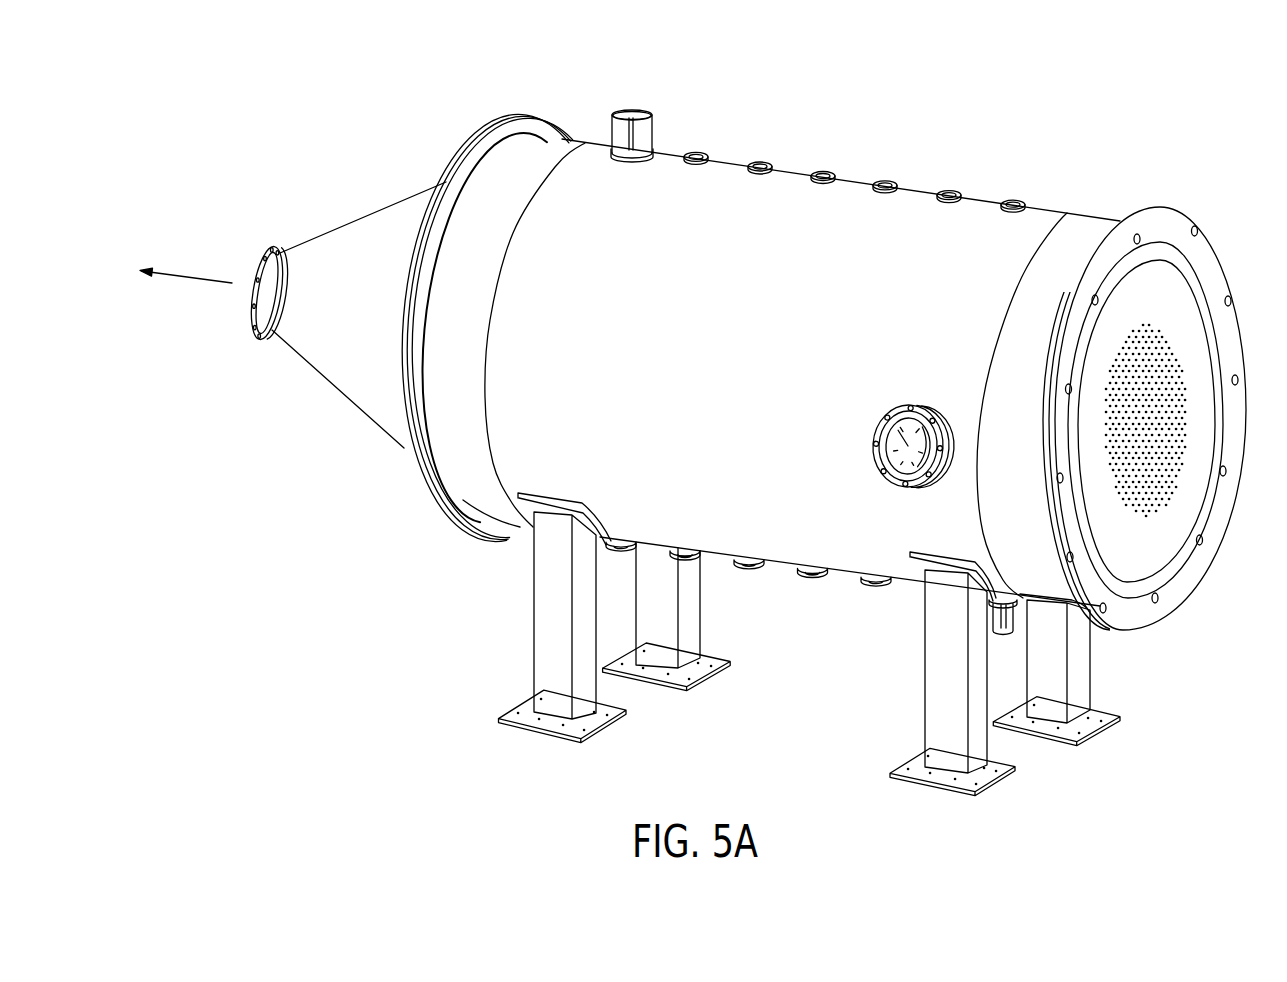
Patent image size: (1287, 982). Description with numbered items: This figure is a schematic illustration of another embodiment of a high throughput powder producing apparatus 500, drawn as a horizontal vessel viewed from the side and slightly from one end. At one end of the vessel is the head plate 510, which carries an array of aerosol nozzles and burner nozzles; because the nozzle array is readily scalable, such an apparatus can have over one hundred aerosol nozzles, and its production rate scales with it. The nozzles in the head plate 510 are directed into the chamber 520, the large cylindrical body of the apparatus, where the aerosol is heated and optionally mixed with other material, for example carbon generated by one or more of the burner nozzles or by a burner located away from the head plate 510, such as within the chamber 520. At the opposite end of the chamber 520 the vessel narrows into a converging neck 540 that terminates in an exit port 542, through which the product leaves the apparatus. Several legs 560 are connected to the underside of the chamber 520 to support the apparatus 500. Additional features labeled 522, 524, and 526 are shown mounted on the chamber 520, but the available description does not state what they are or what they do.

The apparatus 500 is at (1087, 111).
The head plate 510 is at (1181, 221).
The chamber 520 is at (914, 199).
The drain nozzle 522 is at (1000, 627).
The vent nozzle 524 is at (638, 115).
The pressure gauge 526 is at (887, 437).
The converging neck 540 is at (332, 251).
The exit port 542 is at (255, 265).
The legs 560 is at (933, 712).